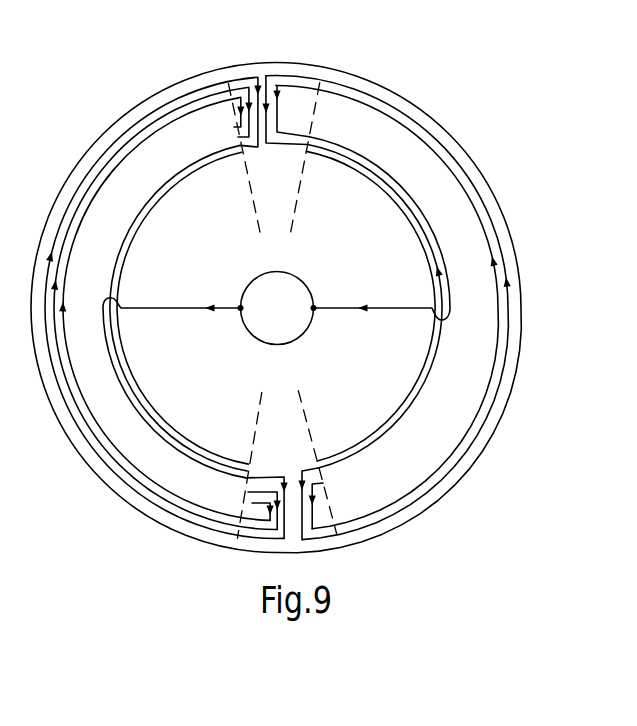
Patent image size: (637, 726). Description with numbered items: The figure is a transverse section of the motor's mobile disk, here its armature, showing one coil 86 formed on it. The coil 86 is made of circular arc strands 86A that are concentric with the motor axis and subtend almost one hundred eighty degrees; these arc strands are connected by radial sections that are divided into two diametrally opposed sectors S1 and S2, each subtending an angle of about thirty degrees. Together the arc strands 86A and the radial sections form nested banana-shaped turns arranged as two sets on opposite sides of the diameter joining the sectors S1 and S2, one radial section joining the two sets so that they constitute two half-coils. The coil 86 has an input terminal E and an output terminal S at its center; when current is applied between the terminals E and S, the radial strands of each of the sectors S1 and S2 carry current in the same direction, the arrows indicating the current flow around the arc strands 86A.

The coil 86 is at (516, 356).
The circular arc strands 86A is at (296, 116).
The first sector S1 is at (302, 176).
The second sector S2 is at (306, 428).
The input terminal E is at (182, 387).
The output terminal S is at (372, 230).